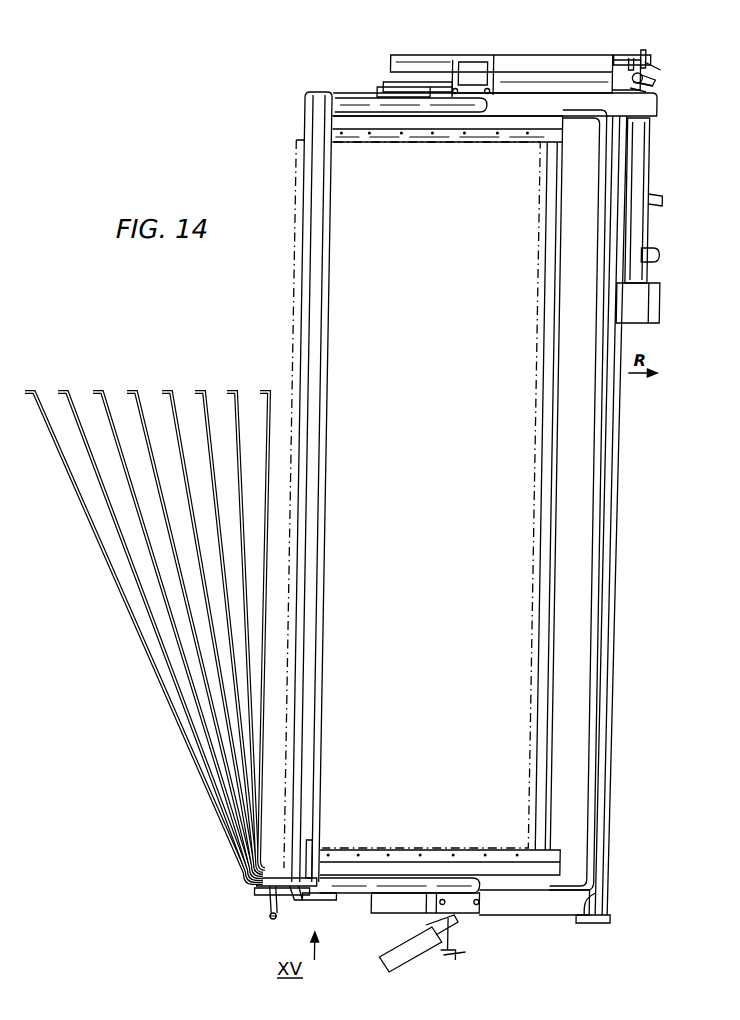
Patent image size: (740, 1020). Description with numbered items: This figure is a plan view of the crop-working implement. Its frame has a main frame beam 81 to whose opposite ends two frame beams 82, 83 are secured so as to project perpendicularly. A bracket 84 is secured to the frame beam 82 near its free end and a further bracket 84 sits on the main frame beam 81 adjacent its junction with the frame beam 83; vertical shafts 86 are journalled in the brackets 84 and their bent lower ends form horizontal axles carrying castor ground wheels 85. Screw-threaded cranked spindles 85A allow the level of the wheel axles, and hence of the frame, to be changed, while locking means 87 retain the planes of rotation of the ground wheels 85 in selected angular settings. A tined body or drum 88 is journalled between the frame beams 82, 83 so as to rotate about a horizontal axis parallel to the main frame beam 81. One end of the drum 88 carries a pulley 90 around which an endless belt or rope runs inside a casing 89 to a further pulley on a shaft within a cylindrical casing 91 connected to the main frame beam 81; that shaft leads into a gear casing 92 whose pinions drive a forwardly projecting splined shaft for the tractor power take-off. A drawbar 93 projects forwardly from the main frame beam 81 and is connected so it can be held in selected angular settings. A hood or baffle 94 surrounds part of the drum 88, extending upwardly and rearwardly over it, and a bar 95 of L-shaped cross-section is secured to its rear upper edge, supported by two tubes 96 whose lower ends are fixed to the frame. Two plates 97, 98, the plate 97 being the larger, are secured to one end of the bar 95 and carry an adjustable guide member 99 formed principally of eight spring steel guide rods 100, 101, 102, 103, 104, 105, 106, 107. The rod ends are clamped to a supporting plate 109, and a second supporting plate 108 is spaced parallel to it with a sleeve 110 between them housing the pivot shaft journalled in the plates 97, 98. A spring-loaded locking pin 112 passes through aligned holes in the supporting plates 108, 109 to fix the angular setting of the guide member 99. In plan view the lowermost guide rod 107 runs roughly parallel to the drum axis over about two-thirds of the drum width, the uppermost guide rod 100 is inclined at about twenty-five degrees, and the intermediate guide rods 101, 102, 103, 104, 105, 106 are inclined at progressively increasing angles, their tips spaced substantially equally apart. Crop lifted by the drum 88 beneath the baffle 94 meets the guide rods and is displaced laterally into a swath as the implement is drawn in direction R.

The main frame beam 81 is at (618, 602).
The frame beam 82 is at (570, 913).
The frame beam 83 is at (510, 63).
The bracket 84 is at (638, 58).
The ground wheel 85 is at (656, 78).
The screw-threaded cranked spindle 85A is at (456, 958).
The vertical shaft 86 is at (648, 90).
The locking means 87 is at (650, 60).
The tined body or drum 88 is at (296, 236).
The casing 89 is at (590, 105).
The pulley 90 is at (378, 88).
The cylindrical casing 91 is at (642, 176).
The gear casing 92 is at (628, 300).
The drawbar 93 is at (658, 254).
The hood or baffle 94 is at (616, 468).
The bar 95 is at (328, 300).
The tube 96 is at (348, 97).
The plate 97 is at (324, 848).
The plate 98 is at (328, 897).
The guide member 99 is at (256, 866).
The guide rod 100 is at (30, 390).
The guide rod 101 is at (63, 390).
The guide rod 102 is at (98, 390).
The guide rod 103 is at (132, 390).
The guide rod 104 is at (167, 390).
The guide rod 105 is at (200, 390).
The guide rod 106 is at (233, 390).
The guide rod 107 is at (278, 379).
The supporting plate 108 is at (300, 878).
The supporting plate 109 is at (288, 920).
The sleeve 110 is at (310, 900).
The spring-loaded locking pin 112 is at (282, 917).